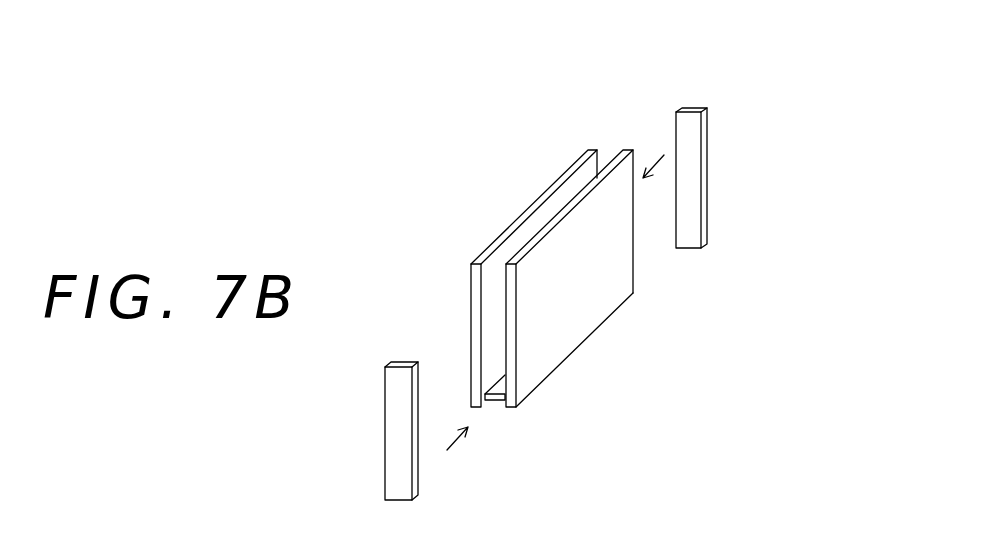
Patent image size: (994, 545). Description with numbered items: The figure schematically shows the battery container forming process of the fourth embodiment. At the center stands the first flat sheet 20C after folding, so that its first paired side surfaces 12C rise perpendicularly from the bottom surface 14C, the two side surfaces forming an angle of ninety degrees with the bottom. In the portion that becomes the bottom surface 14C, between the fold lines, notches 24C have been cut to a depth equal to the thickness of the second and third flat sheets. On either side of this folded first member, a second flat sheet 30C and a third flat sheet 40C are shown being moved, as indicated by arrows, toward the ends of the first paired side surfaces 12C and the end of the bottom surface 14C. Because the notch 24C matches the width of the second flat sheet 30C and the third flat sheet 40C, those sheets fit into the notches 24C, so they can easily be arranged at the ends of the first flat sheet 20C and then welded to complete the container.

The first paired side surfaces 12C is at (508, 225).
The bottom surface 14C is at (565, 360).
The first flat sheet 20C is at (557, 174).
The notches 24C is at (493, 400).
The second flat sheet 30C is at (393, 362).
The third flat sheet 40C is at (693, 108).